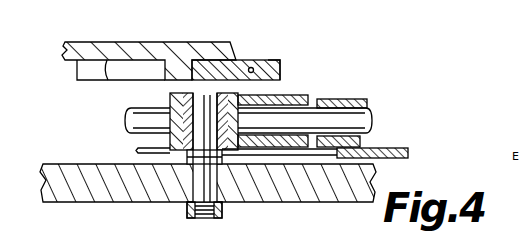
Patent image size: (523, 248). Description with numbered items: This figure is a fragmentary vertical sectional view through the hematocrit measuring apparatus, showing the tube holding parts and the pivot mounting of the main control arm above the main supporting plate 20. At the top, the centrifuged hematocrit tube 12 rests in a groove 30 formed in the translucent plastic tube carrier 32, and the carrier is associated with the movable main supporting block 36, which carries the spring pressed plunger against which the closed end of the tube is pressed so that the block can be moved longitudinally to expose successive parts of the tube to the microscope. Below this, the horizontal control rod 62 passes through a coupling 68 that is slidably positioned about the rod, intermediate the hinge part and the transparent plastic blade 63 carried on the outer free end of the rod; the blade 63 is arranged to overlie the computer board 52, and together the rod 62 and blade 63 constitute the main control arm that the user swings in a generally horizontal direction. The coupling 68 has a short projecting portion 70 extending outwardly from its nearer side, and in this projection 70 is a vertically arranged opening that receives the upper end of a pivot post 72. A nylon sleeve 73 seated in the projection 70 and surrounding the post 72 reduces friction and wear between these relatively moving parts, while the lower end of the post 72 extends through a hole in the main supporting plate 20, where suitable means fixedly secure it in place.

The movable main supporting block 36 is at (195, 52).
The groove 30 is at (251, 68).
The hematocrit tube 12 is at (283, 62).
The tube carrier 32 is at (282, 73).
The coupling 68 is at (303, 98).
The transparent plastic blade 63 is at (365, 103).
The computer board 52 is at (400, 150).
The pivot post 72 is at (170, 112).
The control rod 62 is at (140, 123).
The projecting portion 70 is at (150, 147).
The nylon sleeve 73 is at (188, 146).
The main supporting plate 20 is at (118, 190).